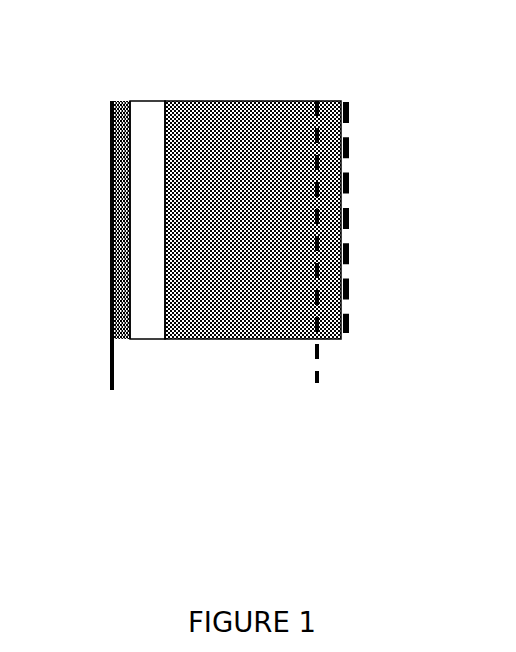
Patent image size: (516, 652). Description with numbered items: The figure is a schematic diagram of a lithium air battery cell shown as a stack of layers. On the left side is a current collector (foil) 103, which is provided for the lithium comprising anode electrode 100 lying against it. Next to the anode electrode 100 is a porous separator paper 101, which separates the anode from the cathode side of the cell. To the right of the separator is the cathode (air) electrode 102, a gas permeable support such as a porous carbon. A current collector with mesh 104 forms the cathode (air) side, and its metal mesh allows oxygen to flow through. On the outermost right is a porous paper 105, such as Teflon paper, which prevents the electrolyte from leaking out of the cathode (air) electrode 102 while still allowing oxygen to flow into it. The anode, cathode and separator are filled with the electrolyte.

The anode electrode 100 is at (127, 327).
The porous separator paper 101 is at (148, 112).
The cathode (air) electrode 102 is at (252, 290).
The current collector (foil) 103 is at (110, 376).
The current collector with mesh 104 is at (319, 370).
The porous paper 105 is at (350, 115).